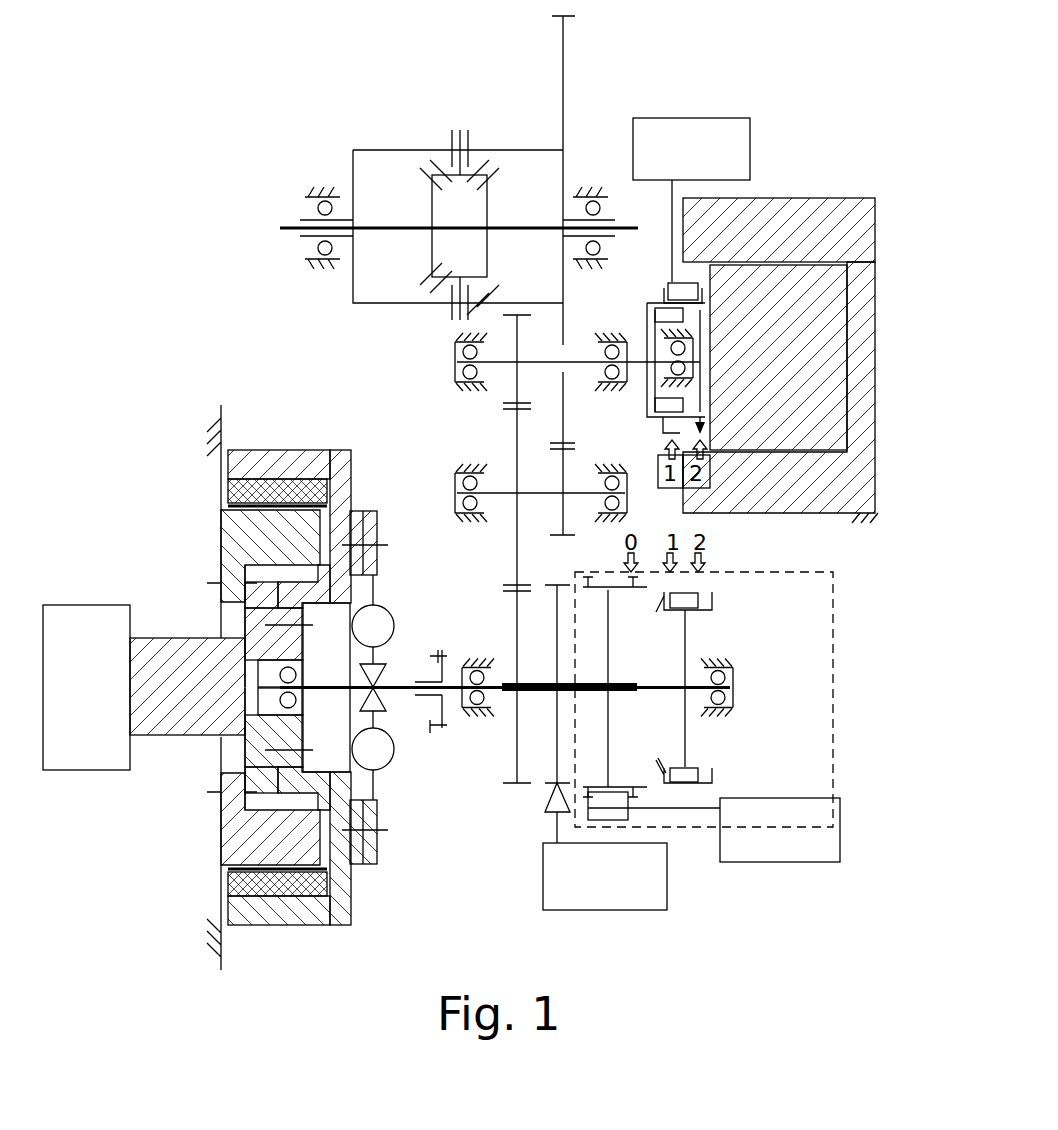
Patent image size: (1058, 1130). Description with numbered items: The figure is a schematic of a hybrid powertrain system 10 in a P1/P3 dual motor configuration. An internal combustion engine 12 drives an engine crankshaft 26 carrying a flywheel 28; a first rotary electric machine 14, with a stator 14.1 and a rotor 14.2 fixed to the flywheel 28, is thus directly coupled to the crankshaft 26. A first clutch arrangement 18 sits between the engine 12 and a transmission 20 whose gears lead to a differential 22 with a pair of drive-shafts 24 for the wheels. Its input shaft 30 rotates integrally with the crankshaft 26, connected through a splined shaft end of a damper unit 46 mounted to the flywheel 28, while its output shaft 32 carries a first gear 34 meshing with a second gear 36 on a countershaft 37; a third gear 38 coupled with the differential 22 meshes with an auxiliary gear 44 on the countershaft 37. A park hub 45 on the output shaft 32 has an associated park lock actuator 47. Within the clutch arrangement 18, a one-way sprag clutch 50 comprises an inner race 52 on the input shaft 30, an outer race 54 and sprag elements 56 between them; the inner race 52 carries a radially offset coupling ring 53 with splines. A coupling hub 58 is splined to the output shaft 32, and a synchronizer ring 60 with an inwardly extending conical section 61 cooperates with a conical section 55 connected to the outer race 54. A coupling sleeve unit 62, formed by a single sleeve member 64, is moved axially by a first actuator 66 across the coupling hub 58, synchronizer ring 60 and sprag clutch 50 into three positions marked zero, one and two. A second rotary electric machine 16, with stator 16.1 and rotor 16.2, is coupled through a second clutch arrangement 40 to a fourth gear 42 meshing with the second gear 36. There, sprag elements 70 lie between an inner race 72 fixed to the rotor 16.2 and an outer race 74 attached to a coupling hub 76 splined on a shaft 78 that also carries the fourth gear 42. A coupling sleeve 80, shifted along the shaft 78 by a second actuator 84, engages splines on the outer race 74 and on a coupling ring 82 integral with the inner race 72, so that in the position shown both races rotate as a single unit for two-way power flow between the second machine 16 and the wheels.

The powertrain system 10 is at (278, 96).
The internal combustion engine 12 is at (90, 617).
The first rotary electric machine 14 is at (262, 663).
The stator 14.1 is at (232, 538).
The rotor 14.2 is at (232, 472).
The second rotary electric machine 16 is at (826, 322).
The stator 16.1 is at (857, 225).
The rotor 16.2 is at (835, 297).
The first clutch arrangement 18 is at (835, 685).
The transmission 20 is at (414, 405).
The differential 22 is at (368, 160).
The drive-shafts 24 is at (515, 227).
The engine crankshaft 26 is at (183, 650).
The flywheel 28 is at (343, 477).
The input shaft 30 is at (688, 693).
The output shaft 32 is at (620, 692).
The first gear 34 is at (515, 602).
The second gear 36 is at (512, 538).
The countershaft 37 is at (580, 492).
The third gear 38 is at (566, 284).
The second clutch arrangement 40 is at (690, 323).
The fourth gear 42 is at (508, 382).
The auxiliary gear 44 is at (558, 478).
The park hub 45 is at (552, 755).
The damper unit 46 is at (397, 584).
The park lock actuator 47 is at (605, 893).
The one-way clutch 50 is at (550, 673).
The inner race 52 is at (705, 612).
The coupling ring 53 is at (720, 598).
The outer race 54 is at (697, 592).
The conical section 55 is at (668, 612).
The sprag elements 56 is at (710, 612).
The coupling hub 58 is at (612, 667).
The synchronizer ring 60 is at (660, 595).
The conical section 61 is at (655, 605).
The coupling sleeve unit 62 is at (609, 580).
The sleeve member 64 is at (602, 590).
The first actuator 66 is at (775, 862).
The sprag elements 70 is at (653, 317).
The inner race 72 is at (695, 332).
The outer race 74 is at (650, 305).
The coupling hub 76 is at (645, 340).
The shaft 78 is at (563, 356).
The coupling sleeve 80 is at (665, 430).
The coupling ring 82 is at (700, 312).
The second actuator 84 is at (690, 118).